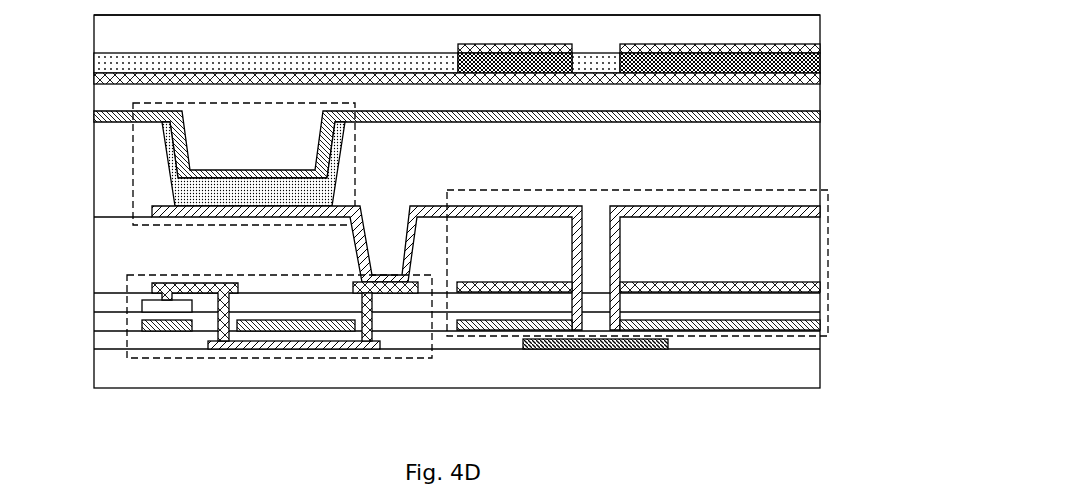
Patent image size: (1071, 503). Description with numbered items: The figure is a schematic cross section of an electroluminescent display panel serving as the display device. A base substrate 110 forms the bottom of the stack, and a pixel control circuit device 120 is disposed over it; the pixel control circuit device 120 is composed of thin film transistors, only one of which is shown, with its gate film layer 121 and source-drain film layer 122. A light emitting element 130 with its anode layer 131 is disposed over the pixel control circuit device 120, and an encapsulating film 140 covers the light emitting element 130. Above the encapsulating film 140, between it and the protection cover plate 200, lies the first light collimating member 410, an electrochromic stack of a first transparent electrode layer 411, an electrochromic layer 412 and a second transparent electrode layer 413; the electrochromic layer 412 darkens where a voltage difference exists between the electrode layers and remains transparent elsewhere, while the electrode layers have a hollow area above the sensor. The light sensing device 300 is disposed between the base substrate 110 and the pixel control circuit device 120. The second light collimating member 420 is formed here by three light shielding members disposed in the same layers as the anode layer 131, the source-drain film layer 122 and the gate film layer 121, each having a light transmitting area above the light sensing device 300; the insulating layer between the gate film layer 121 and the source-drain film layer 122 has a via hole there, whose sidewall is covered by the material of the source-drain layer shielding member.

The base substrate 110 is at (793, 370).
The protection cover plate 200 is at (800, 27).
The first light collimating member 410 is at (508, 64).
The first transparent electrode layer 411 is at (800, 77).
The electrochromic layer 412 is at (800, 62).
The second transparent electrode layer 413 is at (800, 49).
The encapsulating film 140 is at (110, 95).
The light emitting element 130 is at (133, 165).
The anode layer 131 is at (152, 209).
The pixel control circuit device 120 is at (279, 348).
The gate film layer 121 is at (273, 332).
The source-drain film layer 122 is at (210, 292).
The second light collimating member 420 is at (828, 253).
The light sensing device 300 is at (610, 348).